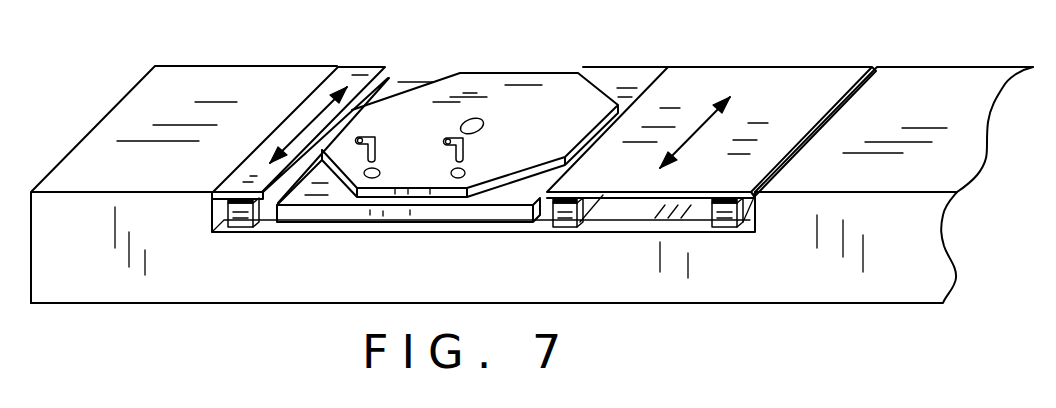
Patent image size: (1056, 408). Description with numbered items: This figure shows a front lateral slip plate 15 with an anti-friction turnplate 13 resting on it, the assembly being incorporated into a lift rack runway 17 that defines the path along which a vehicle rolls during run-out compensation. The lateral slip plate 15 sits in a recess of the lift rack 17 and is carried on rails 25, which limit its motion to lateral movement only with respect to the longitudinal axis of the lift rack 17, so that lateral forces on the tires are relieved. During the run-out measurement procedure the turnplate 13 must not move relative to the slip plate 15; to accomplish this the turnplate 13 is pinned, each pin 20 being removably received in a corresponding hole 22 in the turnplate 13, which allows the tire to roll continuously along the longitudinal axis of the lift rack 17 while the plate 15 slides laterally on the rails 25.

The turnplate 13 is at (580, 115).
The lateral slip plate 15 is at (805, 108).
The lift rack runway 17 is at (936, 117).
The pin 20 is at (369, 136).
The hole 22 is at (378, 168).
The rails 25 is at (717, 205).